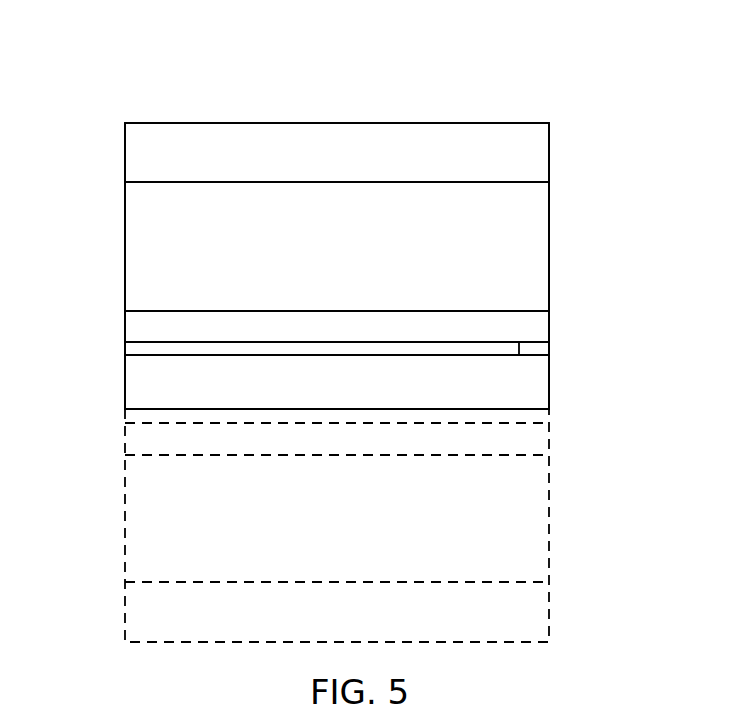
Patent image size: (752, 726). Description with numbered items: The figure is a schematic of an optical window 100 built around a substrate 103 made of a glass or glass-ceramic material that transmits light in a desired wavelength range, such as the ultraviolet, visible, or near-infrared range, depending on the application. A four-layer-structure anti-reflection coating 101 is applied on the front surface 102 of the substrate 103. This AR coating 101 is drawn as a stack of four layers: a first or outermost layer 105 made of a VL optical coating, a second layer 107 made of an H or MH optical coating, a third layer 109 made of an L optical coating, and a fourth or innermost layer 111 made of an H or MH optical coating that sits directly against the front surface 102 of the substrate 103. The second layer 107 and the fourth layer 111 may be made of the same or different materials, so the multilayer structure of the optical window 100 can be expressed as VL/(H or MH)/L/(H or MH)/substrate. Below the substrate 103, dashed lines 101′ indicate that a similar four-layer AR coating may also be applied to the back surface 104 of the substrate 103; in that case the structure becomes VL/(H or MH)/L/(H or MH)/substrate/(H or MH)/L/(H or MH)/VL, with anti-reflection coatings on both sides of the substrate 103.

The optical window 100 is at (342, 331).
The 4 L-structure AR coating 101 is at (342, 290).
The dashed lines indicating 4 L-structure AR coating on back surface 101′ is at (551, 536).
The front surface 102 is at (519, 342).
The substrate 103 is at (551, 382).
The back surface 104 is at (522, 409).
The first layer 105 is at (125, 150).
The second layer 107 is at (125, 240).
The third layer 109 is at (125, 322).
The fourth layer 111 is at (125, 347).